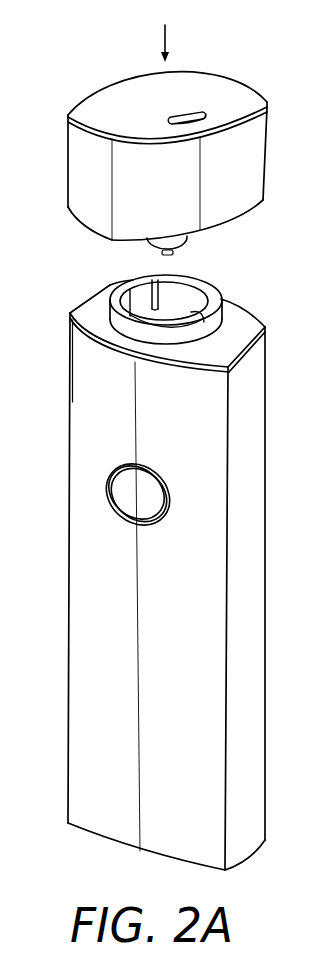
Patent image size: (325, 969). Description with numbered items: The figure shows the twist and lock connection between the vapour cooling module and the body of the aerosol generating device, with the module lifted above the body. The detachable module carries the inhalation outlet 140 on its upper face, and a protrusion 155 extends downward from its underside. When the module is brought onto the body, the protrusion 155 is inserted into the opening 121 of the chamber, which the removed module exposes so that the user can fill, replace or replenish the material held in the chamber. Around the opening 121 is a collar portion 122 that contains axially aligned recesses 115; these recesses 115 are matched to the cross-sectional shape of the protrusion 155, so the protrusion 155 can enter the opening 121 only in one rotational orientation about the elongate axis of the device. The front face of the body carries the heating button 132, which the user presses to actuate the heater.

The recess 115 is at (144, 290).
The opening 121 is at (122, 271).
The collar portion 122 is at (130, 331).
The heating button 132 is at (122, 487).
The inhalation outlet 140 is at (194, 116).
The protrusion 155 is at (188, 241).